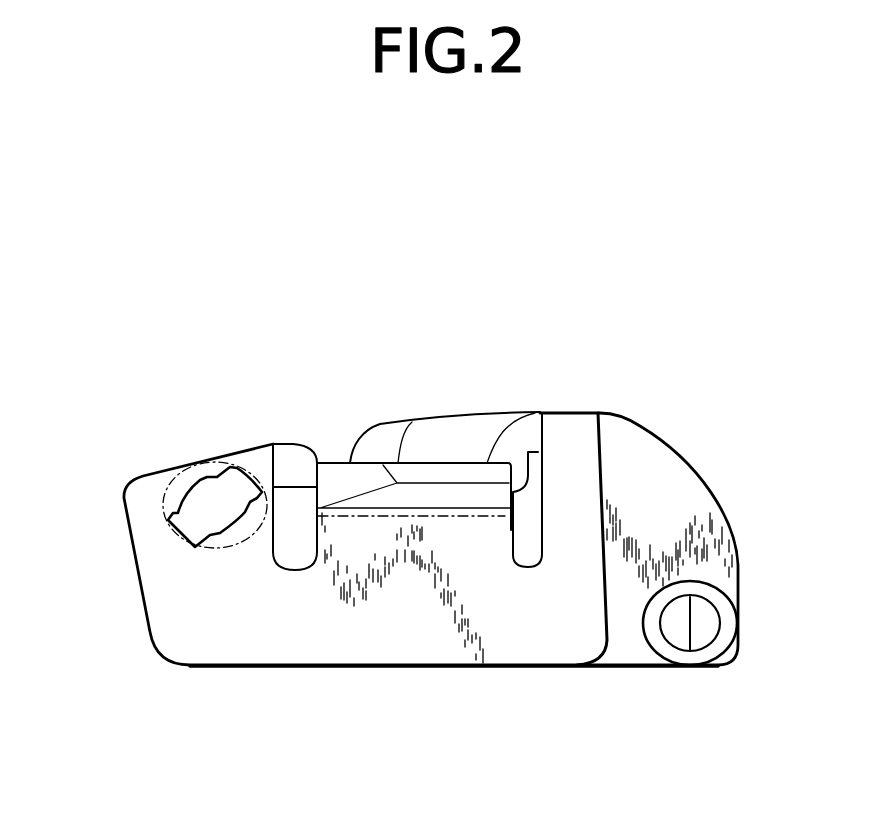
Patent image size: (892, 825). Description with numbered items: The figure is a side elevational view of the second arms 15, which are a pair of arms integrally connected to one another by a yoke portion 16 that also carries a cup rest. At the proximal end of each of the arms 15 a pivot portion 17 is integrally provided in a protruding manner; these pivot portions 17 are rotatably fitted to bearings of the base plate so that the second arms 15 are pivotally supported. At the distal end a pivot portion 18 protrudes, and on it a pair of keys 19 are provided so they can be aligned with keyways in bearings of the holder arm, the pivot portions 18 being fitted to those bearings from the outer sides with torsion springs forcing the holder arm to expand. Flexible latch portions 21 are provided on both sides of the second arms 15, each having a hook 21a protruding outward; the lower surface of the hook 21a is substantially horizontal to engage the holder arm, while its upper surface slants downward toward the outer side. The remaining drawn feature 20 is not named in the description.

The base body 15 is at (413, 648).
The cover portion 16 is at (650, 458).
The hole 17 is at (712, 623).
The cam member 18 is at (203, 480).
The projection 19 is at (233, 483).
The groove 20 is at (297, 563).
The slide member 21 is at (383, 533).
The cover of slide member 21a is at (443, 472).